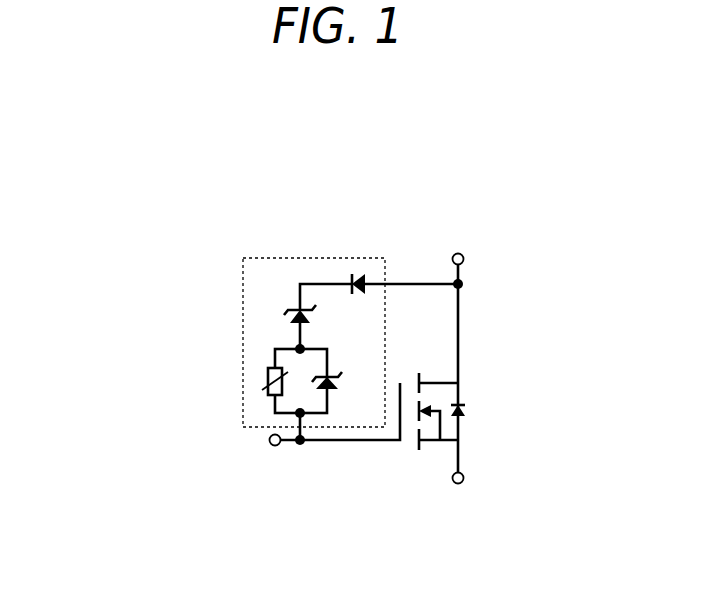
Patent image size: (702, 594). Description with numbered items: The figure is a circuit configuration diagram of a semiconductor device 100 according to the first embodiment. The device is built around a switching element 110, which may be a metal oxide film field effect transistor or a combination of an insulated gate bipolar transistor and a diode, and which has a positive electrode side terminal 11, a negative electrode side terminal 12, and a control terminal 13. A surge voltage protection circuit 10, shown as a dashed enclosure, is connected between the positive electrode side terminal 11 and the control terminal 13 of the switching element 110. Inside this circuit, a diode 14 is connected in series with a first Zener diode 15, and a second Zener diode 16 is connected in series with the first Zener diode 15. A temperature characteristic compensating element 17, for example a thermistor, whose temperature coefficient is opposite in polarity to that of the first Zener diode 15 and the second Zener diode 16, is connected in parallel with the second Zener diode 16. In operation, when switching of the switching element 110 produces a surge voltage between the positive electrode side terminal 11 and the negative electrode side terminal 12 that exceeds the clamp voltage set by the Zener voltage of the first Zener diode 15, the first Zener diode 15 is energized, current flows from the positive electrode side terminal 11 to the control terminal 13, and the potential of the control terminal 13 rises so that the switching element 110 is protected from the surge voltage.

The semiconductor device 100 is at (309, 328).
The surge voltage protection circuit 10 is at (278, 281).
The positive electrode side terminal 11 is at (483, 228).
The negative electrode side terminal 12 is at (489, 509).
The control terminal 13 is at (244, 473).
The diode 14 is at (313, 213).
The first Zener diode 15 is at (256, 261).
The second Zener diode 16 is at (220, 332).
The temperature characteristic compensating element 17 is at (203, 371).
The switching element 110 is at (507, 379).